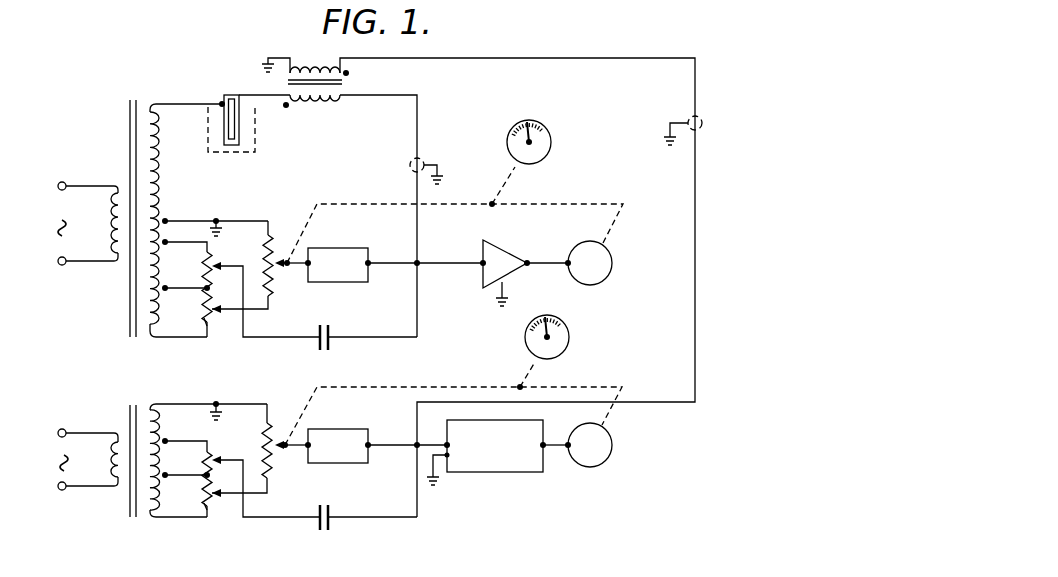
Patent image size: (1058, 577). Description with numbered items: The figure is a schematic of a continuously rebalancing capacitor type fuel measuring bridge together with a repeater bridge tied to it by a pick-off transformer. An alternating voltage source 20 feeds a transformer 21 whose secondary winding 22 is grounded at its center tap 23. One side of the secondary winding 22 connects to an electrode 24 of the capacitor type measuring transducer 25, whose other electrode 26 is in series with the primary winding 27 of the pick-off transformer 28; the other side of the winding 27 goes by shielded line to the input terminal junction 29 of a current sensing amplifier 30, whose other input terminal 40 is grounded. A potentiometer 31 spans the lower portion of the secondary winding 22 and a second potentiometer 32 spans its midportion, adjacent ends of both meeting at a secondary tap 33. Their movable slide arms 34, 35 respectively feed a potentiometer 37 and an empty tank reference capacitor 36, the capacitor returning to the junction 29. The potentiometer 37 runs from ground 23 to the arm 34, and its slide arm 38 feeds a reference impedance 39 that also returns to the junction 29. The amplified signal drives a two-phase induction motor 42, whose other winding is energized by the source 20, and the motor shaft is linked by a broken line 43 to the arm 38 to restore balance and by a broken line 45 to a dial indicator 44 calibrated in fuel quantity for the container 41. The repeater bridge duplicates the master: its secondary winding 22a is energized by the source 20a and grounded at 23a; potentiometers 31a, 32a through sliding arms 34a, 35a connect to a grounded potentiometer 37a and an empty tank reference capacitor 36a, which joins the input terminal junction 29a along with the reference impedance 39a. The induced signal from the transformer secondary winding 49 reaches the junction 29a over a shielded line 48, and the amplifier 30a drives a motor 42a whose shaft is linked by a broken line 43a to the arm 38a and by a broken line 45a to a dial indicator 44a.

The source 20 is at (52, 241).
The transformer 21 is at (112, 307).
The secondary winding 22 is at (166, 172).
The center tap 23 is at (167, 221).
The electrode 24 is at (222, 104).
The capacitor type measuring transducer 25 is at (246, 130).
The other electrode 26 is at (232, 95).
The primary winding 27 is at (333, 102).
The pick-off transformer 28 is at (343, 89).
The input terminal junction 29 is at (419, 260).
The current sensing amplifier 30 is at (515, 258).
The potentiometer 31 is at (205, 326).
The second potentiometer 32 is at (210, 262).
The secondary tap 33 is at (167, 289).
The movable slide arm 34 is at (216, 314).
The movable slide arm 35 is at (217, 268).
The capacitor 36 is at (333, 333).
The potentiometer 37 is at (270, 232).
The movable slide arm 38 is at (288, 270).
The impedance 39 is at (343, 258).
The other input terminal 40 is at (508, 290).
The container 41 is at (256, 152).
The two-phase induction motor 42 is at (612, 266).
The broken line 43 is at (553, 204).
The dial indicator 44 is at (552, 142).
The broken line 45 is at (516, 173).
The shielded line 48 is at (696, 285).
The transformer secondary winding 49 is at (312, 68).
The AC input terminals 20a is at (76, 451).
The secondary winding 22a is at (160, 405).
The ground 23a is at (217, 404).
The input terminal junction 29a is at (416, 446).
The amplifier 30a is at (535, 470).
The potentiometer 31a is at (210, 512).
The potentiometer 32a is at (210, 458).
The sliding arm 34a is at (216, 498).
The sliding arm 35a is at (211, 464).
The empty tank reference capacitor 36a is at (333, 513).
The potentiometer 37a is at (268, 425).
The potentiometer arm 38a is at (287, 452).
The reference impedance 39a is at (343, 440).
The two-phase induction motor 42a is at (612, 452).
The mechanical linkage 43a is at (612, 387).
The dial indicator 44a is at (569, 342).
The meter linkage 45a is at (537, 365).